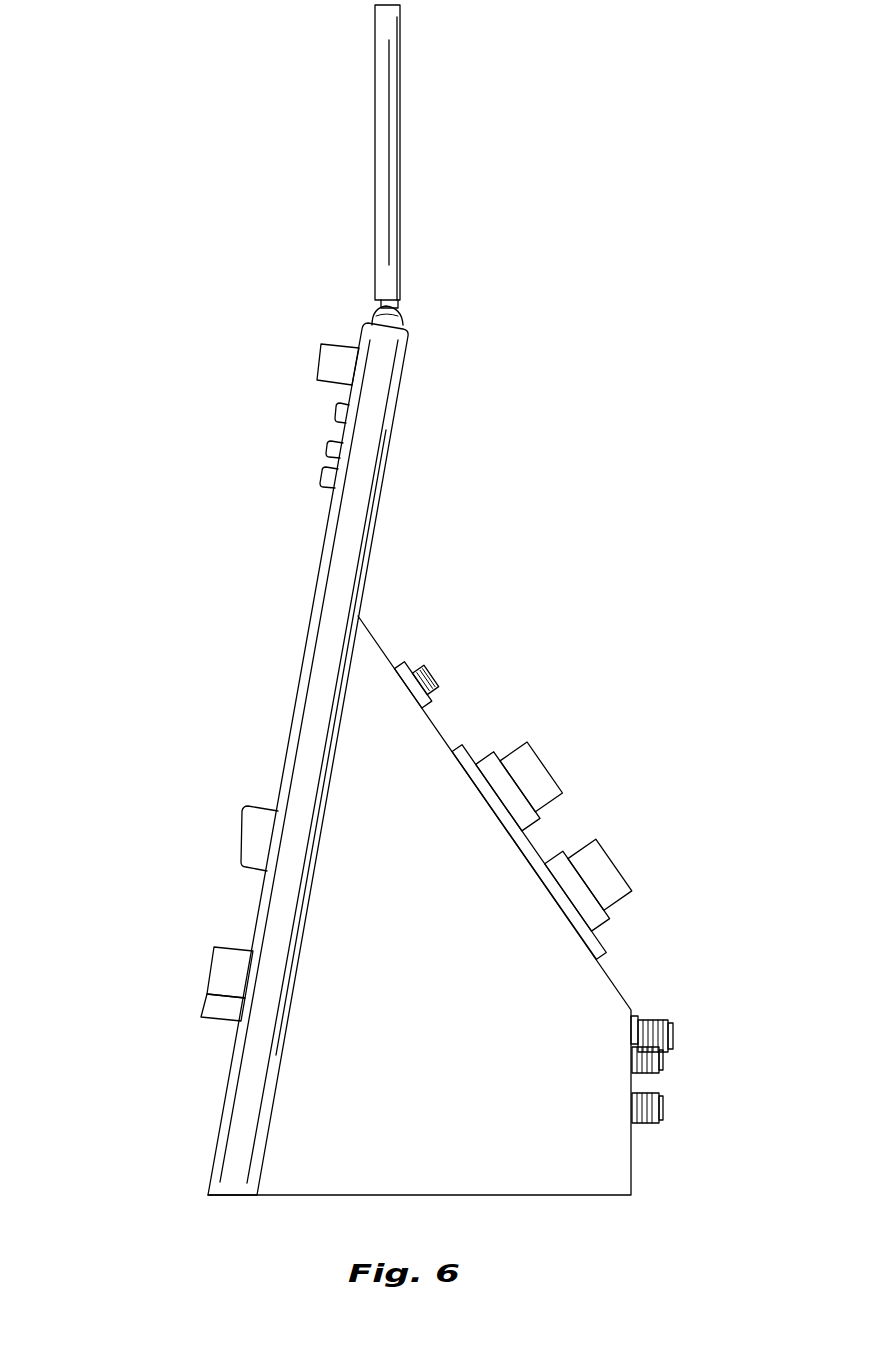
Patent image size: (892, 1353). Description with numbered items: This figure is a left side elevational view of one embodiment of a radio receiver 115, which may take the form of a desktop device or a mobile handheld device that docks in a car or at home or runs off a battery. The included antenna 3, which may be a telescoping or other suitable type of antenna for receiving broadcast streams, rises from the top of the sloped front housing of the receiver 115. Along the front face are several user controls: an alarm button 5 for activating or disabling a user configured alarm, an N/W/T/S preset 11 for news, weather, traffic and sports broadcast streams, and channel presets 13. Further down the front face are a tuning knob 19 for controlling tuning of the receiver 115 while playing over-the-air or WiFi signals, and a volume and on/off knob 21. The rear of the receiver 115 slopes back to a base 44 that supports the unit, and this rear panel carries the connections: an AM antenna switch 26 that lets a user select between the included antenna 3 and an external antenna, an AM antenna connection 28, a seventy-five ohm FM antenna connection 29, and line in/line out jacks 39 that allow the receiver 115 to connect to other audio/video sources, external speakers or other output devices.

The receiver 115 is at (152, 195).
The included antenna 3 is at (374, 203).
The alarm button 5 is at (320, 362).
The N/W/T/S preset 11 is at (336, 410).
The channel presets 13 is at (327, 447).
The tuning knob 19 is at (240, 838).
The volume and on/off knob 21 is at (206, 981).
The AM antenna switch 26 is at (426, 668).
The AM antenna connection 28 is at (549, 769).
The 75 ohm FM antenna connection 29 is at (673, 1033).
The line in/line out jacks 39 is at (662, 1075).
The base 44 is at (578, 1154).